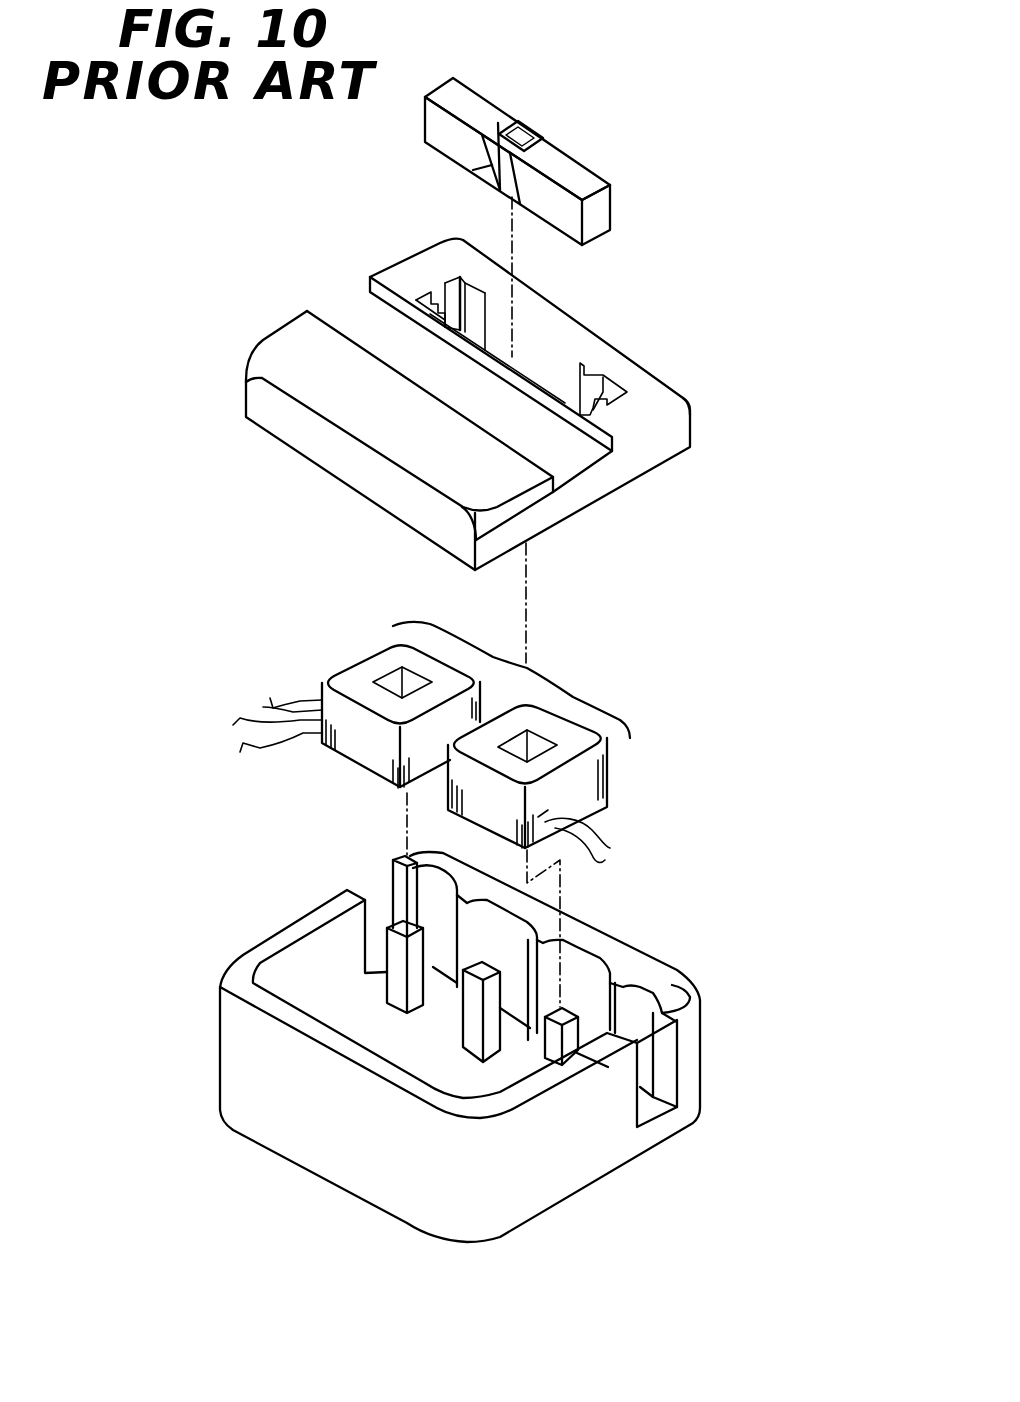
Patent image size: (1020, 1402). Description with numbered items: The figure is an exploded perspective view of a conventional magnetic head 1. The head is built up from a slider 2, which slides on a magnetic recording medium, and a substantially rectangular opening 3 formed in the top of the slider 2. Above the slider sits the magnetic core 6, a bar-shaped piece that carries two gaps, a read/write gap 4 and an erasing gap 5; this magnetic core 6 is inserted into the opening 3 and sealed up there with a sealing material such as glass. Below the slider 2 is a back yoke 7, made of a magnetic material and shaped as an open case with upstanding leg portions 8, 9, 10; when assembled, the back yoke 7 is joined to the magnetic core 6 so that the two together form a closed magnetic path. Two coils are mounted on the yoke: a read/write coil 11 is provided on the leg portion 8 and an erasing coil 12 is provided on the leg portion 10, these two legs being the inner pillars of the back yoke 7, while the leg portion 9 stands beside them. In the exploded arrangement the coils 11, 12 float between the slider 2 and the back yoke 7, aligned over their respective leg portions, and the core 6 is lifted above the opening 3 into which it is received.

The magnetic head 1 is at (800, 282).
The slider 2 is at (405, 248).
The opening 3 is at (552, 368).
The read/write gap 4 is at (501, 133).
The erasing gap 5 is at (543, 144).
The magnetic core 6 is at (597, 170).
The back yoke 7 is at (673, 963).
The leg portion 8 is at (392, 993).
The leg portion 9 is at (468, 1052).
The leg portion 10 is at (549, 1053).
The read/write coil 11 is at (377, 667).
The erasing coil 12 is at (573, 793).